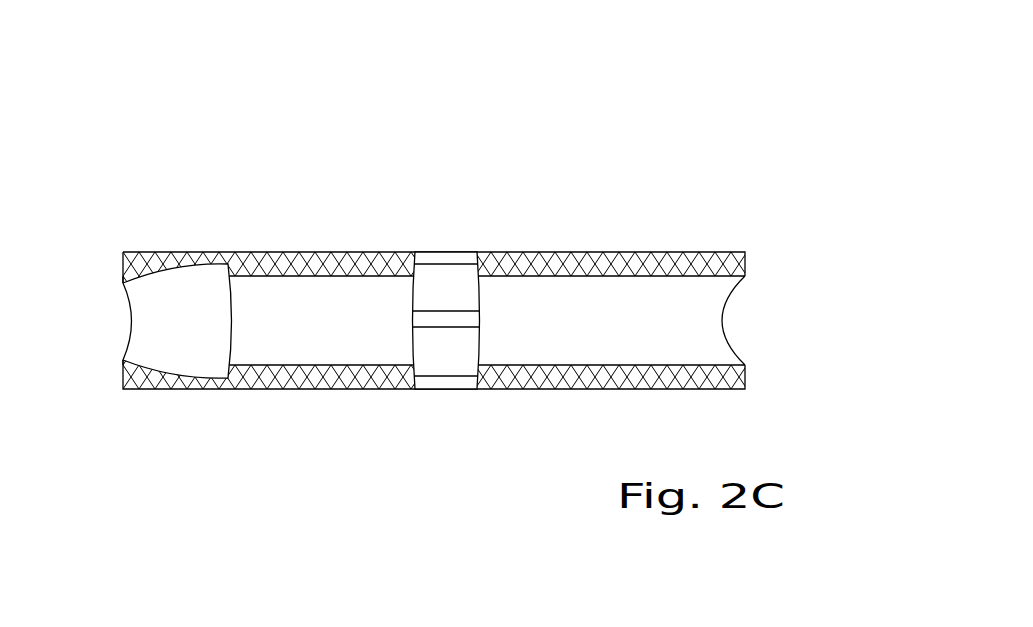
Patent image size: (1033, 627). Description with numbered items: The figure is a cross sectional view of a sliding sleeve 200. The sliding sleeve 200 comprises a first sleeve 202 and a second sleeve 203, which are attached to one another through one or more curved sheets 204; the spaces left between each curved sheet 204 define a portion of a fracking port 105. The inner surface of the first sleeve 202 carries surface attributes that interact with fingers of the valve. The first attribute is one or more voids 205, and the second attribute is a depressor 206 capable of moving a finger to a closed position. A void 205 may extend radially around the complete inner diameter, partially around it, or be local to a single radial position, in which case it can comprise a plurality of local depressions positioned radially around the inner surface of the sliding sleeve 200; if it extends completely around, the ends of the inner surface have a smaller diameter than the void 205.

The sliding sleeve 200 is at (389, 313).
The first sleeve 202 is at (315, 252).
The second sleeve 203 is at (600, 252).
The curved sheet 204 is at (474, 353).
The void 205 is at (170, 297).
The depressor 206 is at (133, 374).
The fracking port 105 is at (450, 388).